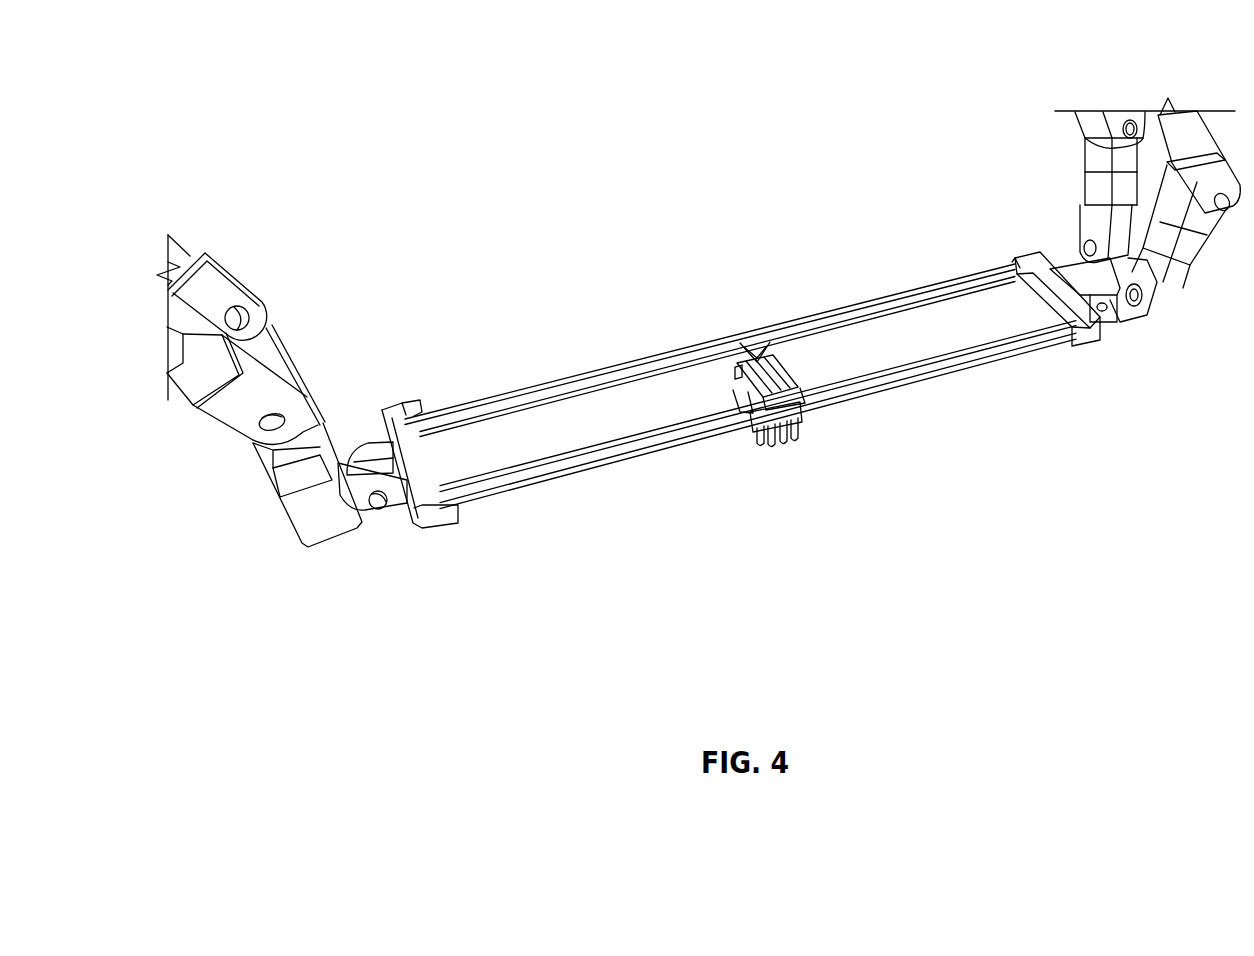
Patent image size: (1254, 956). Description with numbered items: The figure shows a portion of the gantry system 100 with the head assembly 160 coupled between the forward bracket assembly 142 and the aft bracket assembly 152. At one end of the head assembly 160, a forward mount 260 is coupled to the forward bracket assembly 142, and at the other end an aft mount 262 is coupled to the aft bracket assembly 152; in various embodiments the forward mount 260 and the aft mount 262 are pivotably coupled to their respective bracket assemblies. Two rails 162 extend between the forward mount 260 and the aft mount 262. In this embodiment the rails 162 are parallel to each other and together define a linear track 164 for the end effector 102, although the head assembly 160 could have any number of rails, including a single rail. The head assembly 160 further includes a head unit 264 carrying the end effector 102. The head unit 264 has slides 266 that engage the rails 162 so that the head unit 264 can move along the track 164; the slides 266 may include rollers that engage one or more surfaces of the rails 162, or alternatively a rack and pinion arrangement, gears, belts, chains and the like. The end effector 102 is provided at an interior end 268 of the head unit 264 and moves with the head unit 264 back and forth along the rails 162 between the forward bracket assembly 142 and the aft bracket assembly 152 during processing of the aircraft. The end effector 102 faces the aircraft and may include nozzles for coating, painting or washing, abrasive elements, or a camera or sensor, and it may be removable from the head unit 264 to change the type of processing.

The gantry system 100 is at (535, 162).
The end effector 102 is at (752, 446).
The forward bracket assembly 142 is at (345, 422).
The aft bracket assembly 152 is at (1115, 327).
The head assembly 160 is at (641, 328).
The rails 162 is at (872, 302).
The track 164 is at (937, 289).
The forward mount 260 is at (408, 520).
The aft mount 262 is at (1056, 254).
The head unit 264 is at (786, 373).
The slides 266 is at (755, 355).
The interior end 268 is at (793, 447).